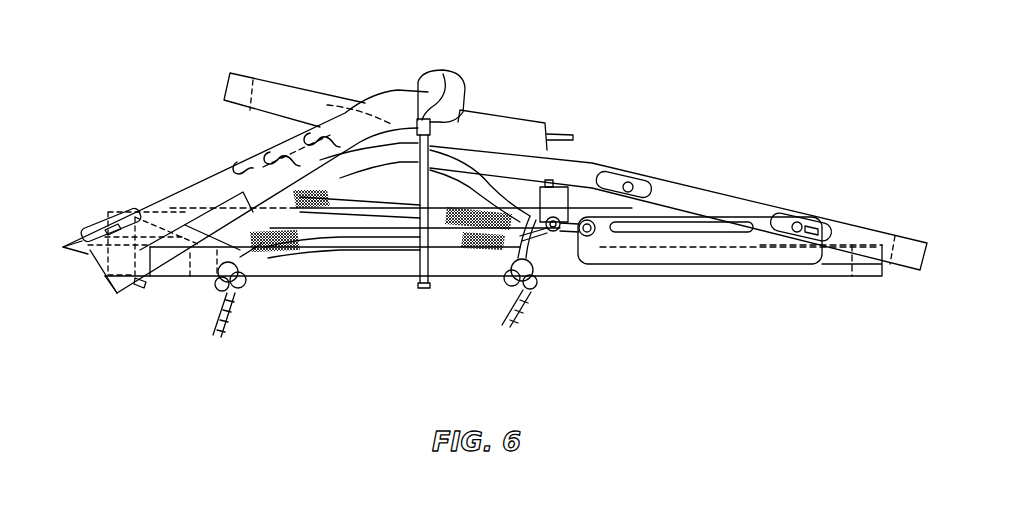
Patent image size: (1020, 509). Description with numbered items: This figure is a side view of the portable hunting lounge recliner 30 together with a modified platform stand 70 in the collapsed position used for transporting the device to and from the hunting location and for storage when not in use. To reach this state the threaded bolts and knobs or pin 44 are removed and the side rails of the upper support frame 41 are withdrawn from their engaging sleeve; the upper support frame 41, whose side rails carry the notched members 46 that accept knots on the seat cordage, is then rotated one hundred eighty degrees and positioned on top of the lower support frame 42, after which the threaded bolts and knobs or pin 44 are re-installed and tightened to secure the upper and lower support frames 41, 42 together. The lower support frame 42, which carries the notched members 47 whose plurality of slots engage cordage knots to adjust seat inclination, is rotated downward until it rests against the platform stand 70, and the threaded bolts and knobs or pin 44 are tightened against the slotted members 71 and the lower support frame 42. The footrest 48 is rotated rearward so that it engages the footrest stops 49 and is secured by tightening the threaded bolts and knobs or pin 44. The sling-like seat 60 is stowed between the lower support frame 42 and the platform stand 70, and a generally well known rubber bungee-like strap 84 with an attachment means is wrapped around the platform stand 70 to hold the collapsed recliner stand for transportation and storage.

The recliner 30 is at (631, 136).
The upper support frame 41 is at (514, 112).
The lower support frame 42 is at (754, 192).
The threaded bolts and knobs or pin 44 is at (125, 205).
The notched member 46 is at (455, 78).
The notched member 47 is at (245, 166).
The footrest 48 is at (251, 75).
The footrest stop 49 is at (589, 183).
The seat 60 is at (336, 240).
The platform stand 70 is at (694, 290).
The slotted member 71 is at (762, 265).
The rubber bungee-like strap 84 is at (428, 286).